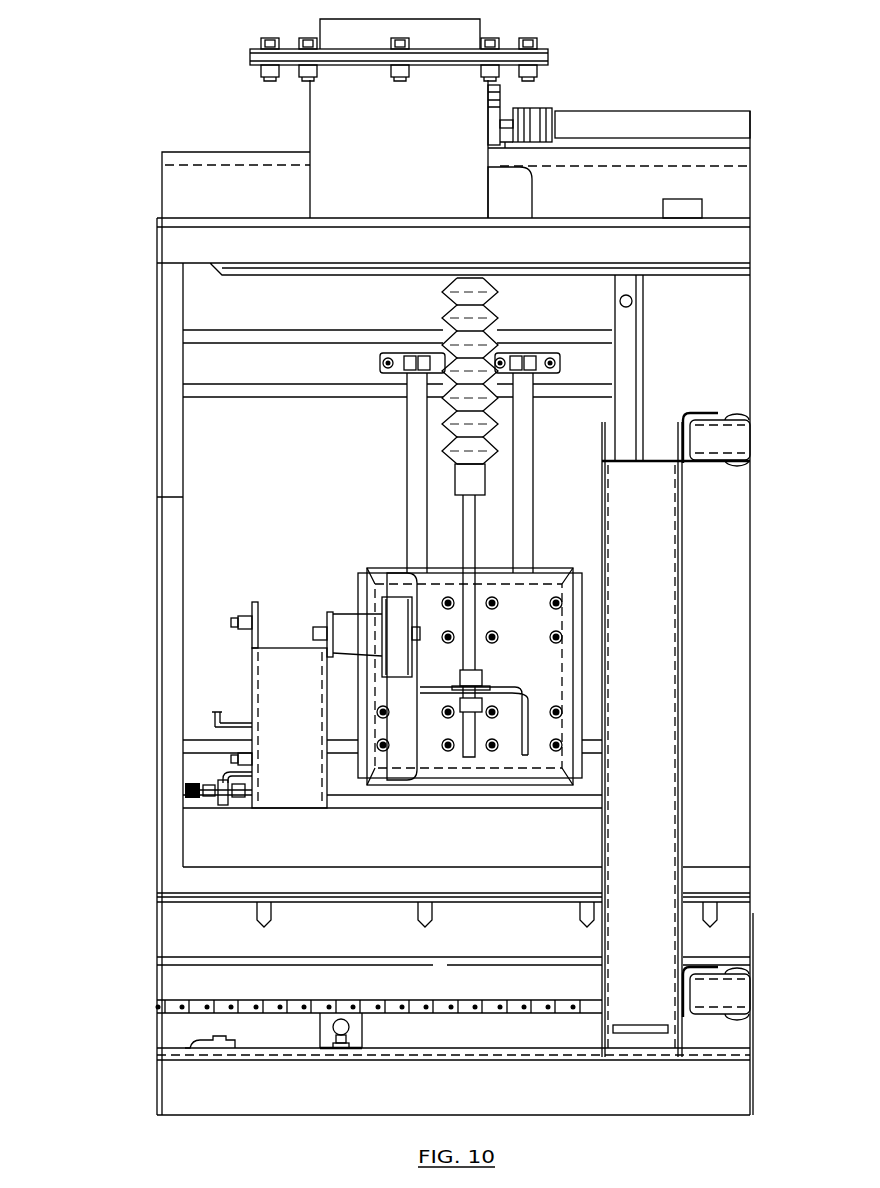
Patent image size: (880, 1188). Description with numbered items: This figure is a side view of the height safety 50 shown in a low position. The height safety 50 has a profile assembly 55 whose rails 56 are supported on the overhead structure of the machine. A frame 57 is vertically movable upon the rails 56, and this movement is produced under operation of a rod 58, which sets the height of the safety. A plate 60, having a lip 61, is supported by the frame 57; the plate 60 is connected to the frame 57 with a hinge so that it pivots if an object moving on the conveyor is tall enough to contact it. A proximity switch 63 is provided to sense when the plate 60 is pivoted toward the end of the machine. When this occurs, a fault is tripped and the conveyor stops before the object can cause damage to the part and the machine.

The height safety 50 is at (250, 668).
The profile assembly 55 is at (420, 612).
The rails 56 is at (405, 488).
The frame 57 is at (385, 590).
The rod 58 is at (465, 532).
The plate 60 is at (235, 720).
The lip 61 is at (215, 717).
The proximity switch 63 is at (207, 798).